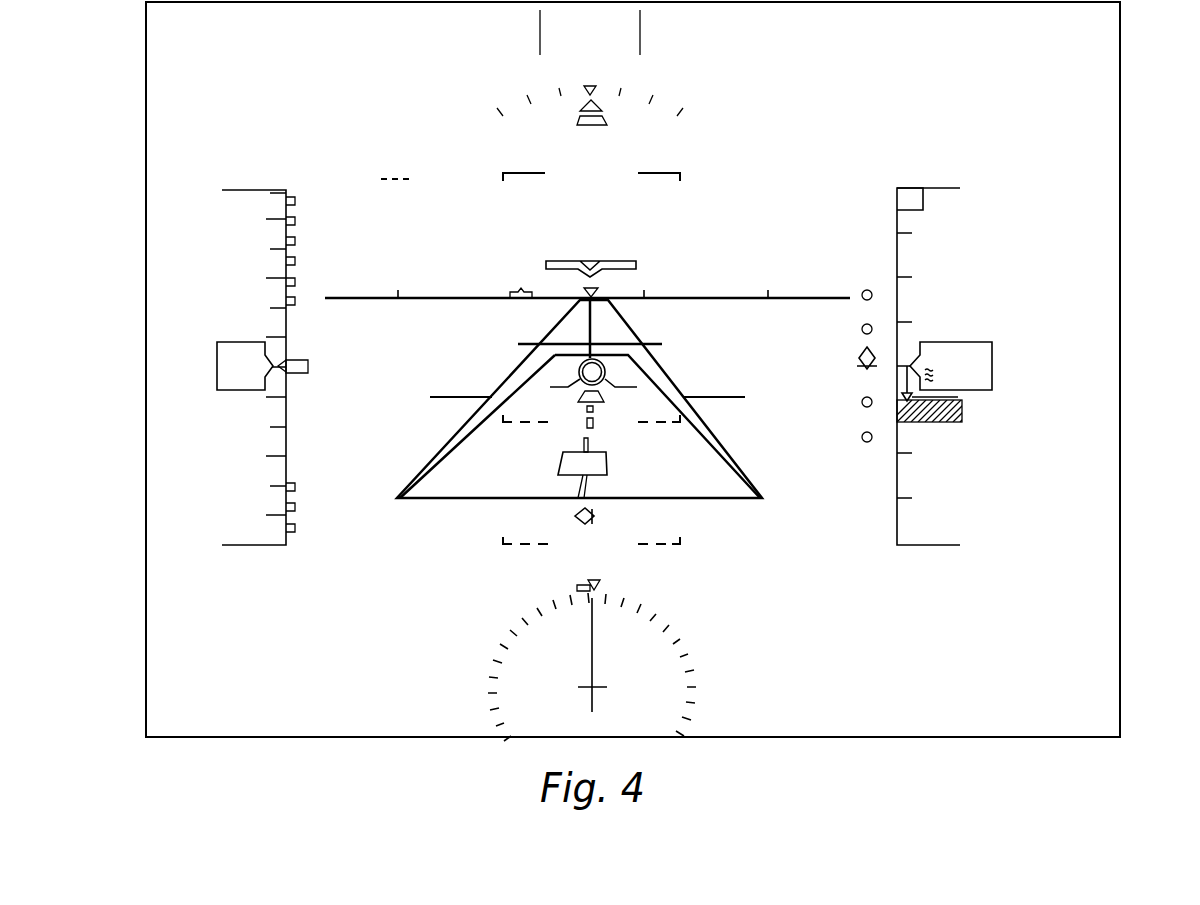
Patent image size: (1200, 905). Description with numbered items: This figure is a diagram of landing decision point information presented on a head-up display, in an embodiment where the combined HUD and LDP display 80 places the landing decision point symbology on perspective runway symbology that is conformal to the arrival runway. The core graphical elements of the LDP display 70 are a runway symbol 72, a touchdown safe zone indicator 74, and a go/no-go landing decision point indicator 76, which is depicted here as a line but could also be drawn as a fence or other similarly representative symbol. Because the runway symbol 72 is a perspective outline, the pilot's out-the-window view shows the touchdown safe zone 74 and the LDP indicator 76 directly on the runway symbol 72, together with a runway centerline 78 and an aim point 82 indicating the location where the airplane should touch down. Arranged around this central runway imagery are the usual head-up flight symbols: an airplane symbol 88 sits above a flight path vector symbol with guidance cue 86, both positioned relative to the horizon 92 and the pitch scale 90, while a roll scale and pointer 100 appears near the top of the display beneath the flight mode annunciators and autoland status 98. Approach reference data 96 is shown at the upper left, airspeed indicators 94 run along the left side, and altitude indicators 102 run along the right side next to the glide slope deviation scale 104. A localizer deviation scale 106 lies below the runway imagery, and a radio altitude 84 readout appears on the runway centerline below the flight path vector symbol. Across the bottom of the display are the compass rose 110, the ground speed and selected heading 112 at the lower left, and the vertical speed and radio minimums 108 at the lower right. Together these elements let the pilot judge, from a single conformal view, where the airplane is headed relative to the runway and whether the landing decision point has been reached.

The combined HUD and LDP display 80 is at (1138, 150).
The LDP display 70 is at (588, 399).
The runway symbol 72 is at (661, 366).
The touchdown safe zone indicator 74 is at (665, 386).
The go/no-go landing decision point indicator 76 is at (532, 345).
The runway centerline 78 is at (597, 335).
The aim point 82 is at (442, 397).
The radio altitude 84 is at (608, 461).
The flight path vector symbol with guidance cue 86 is at (608, 372).
The airplane symbol 88 is at (604, 261).
The pitch scale 90 is at (810, 178).
The horizon 92 is at (368, 298).
The airspeed indicators 94 is at (263, 153).
The approach reference data 96 is at (351, 136).
The flight mode annunciators and autoland status 98 is at (536, 38).
The roll scale and pointer 100 is at (528, 93).
The altitude indicators 102 is at (964, 160).
The glide slope deviation scale 104 is at (862, 455).
The localizer deviation scale 106 is at (677, 514).
The vertical speed and radio minimums 108 is at (804, 667).
The compass rose 110 is at (694, 695).
The ground speed and selected heading 112 is at (341, 668).